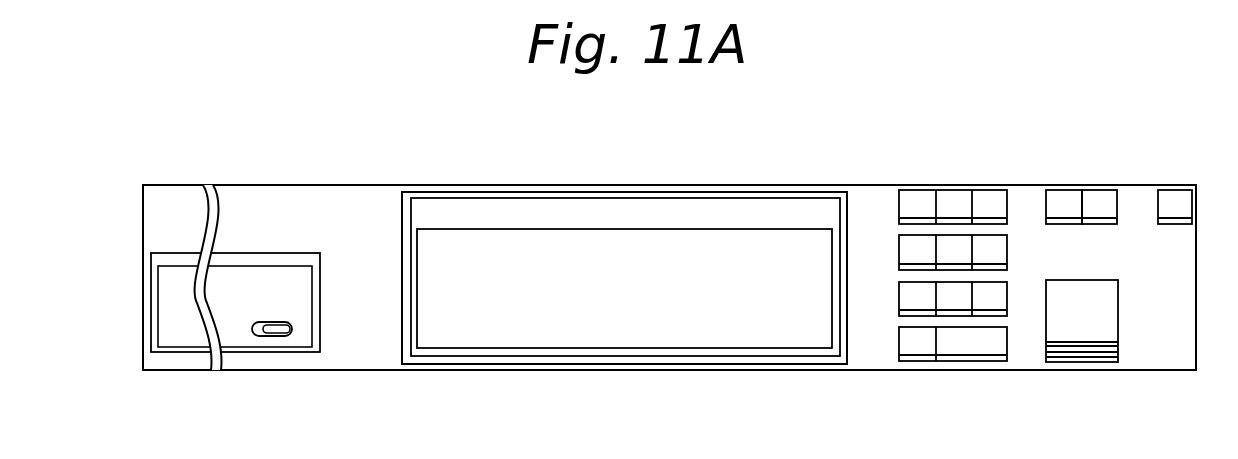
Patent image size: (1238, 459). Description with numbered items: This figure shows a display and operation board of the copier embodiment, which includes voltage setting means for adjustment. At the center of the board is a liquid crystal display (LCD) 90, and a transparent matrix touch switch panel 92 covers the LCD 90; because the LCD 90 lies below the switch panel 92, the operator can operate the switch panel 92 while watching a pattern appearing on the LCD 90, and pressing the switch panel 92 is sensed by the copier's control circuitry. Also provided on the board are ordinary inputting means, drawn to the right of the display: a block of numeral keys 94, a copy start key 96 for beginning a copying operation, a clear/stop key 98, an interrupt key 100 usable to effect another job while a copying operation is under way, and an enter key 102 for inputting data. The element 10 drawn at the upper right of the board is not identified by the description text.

The key 10 is at (1182, 208).
The LCD display 90 is at (500, 340).
The display panel frame 92 is at (748, 357).
The ten-key pad 94 is at (952, 277).
The button 96 is at (1090, 333).
The key 98 is at (977, 355).
The key 100 is at (1107, 199).
The key 102 is at (1064, 199).